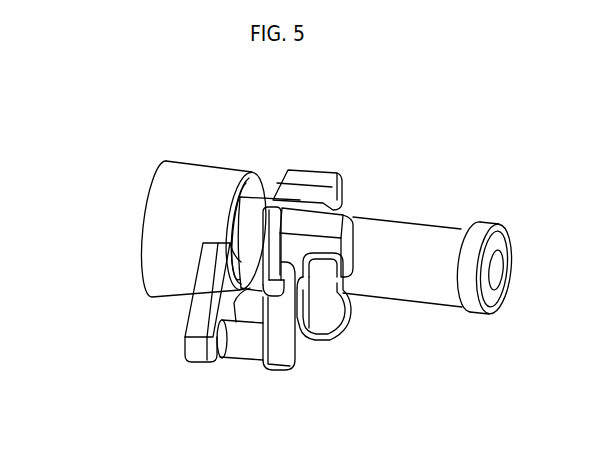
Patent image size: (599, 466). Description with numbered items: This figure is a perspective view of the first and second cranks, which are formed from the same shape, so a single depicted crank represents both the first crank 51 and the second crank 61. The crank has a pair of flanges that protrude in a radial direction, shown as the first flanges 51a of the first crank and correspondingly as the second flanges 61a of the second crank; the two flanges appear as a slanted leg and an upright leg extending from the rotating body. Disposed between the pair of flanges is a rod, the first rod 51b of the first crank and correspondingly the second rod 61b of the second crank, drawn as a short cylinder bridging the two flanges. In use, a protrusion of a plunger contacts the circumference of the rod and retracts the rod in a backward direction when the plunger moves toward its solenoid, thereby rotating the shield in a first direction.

The first crank 51 is at (220, 205).
The second crank 61 is at (201, 165).
The first flanges 51a is at (241, 314).
The second flanges 61a is at (204, 349).
The first rod 51b is at (261, 382).
The second rod 61b is at (243, 348).